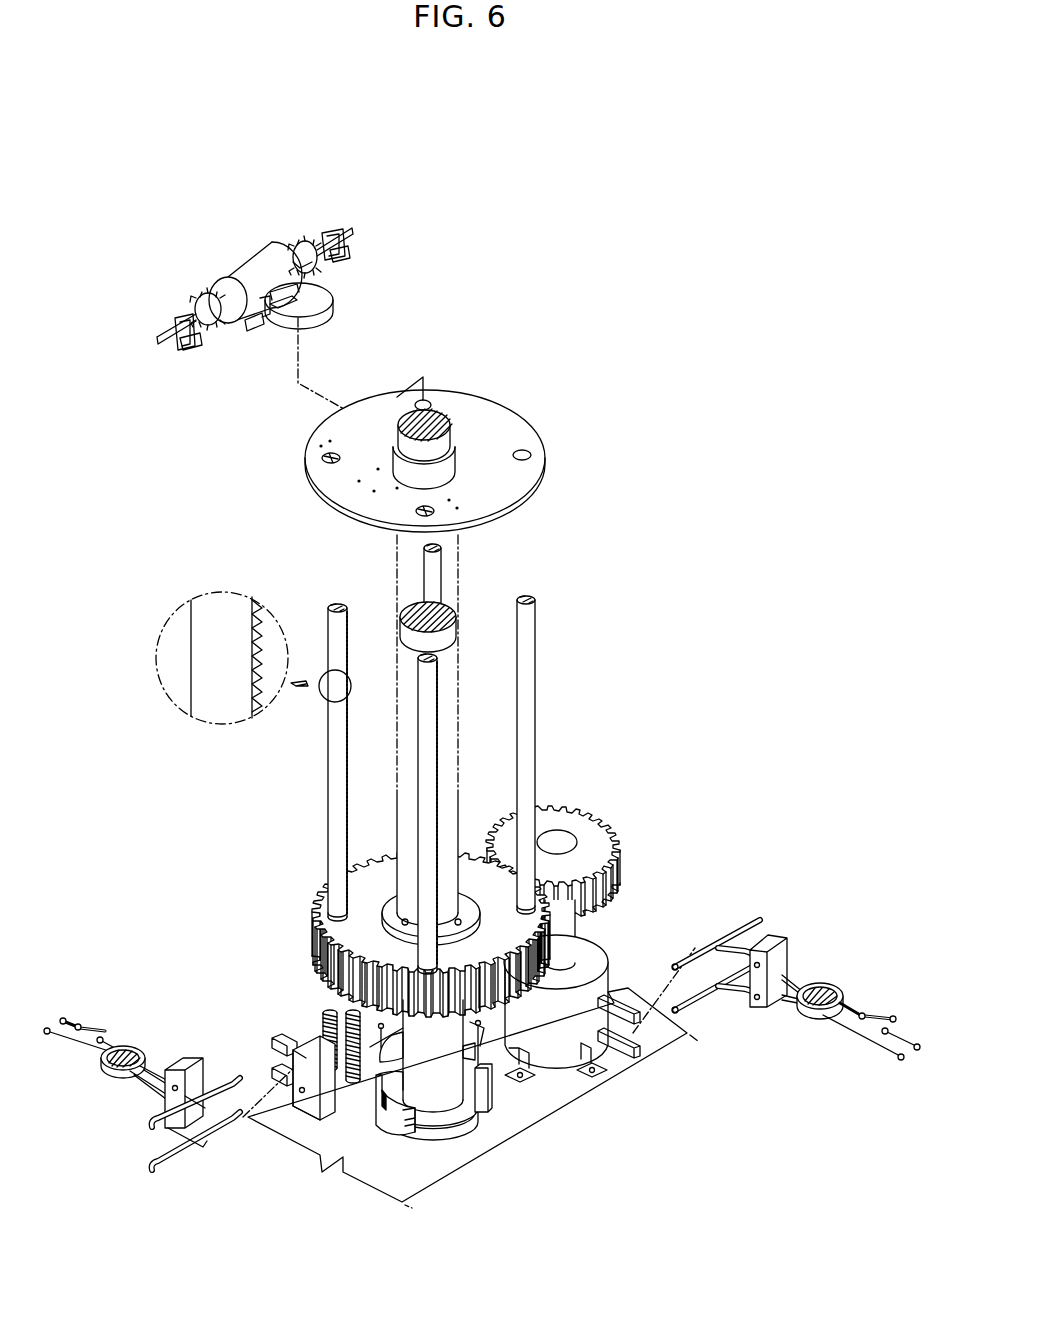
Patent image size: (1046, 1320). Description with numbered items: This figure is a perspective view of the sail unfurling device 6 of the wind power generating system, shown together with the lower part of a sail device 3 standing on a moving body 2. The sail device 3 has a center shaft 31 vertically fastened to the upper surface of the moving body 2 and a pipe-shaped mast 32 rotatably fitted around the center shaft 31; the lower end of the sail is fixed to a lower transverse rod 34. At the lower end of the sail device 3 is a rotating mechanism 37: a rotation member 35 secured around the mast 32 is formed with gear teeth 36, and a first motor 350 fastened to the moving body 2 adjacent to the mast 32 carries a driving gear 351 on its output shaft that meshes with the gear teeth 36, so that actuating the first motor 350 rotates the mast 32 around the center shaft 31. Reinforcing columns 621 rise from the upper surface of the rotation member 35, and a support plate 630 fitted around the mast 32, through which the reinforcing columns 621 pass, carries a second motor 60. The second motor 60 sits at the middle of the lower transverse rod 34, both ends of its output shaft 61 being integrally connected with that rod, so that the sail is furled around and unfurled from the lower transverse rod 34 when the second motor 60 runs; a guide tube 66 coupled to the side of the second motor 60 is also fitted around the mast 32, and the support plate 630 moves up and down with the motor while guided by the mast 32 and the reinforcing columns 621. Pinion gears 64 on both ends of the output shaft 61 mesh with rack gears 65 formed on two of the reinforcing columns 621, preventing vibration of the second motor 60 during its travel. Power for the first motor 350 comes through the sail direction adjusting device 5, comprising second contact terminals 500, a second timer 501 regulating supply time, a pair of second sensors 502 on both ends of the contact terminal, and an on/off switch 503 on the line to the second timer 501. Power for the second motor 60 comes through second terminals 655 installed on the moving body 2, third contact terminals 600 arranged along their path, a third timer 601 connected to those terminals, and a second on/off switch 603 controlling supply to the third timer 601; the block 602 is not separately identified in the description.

The moving body 2 is at (551, 1121).
The sail device 3 is at (176, 481).
The sail direction adjusting device 5 is at (796, 978).
The sail unfurling device 6 is at (153, 765).
The center shaft 31 is at (453, 429).
The mast 32 is at (457, 464).
The lower transverse rod 34 is at (338, 232).
The rotation member 35 is at (398, 934).
The gear teeth 36 is at (311, 904).
The rotating mechanism 37 is at (289, 830).
The second motor 60 is at (244, 283).
The output shaft 61 is at (298, 252).
The pinion gear 64 is at (320, 268).
The rack gear 65 is at (259, 622).
The guide tube 66 is at (334, 313).
The first motor 350 is at (598, 949).
The driving gear 351 is at (575, 808).
The second contact terminal 500 is at (708, 945).
The second timer 501 is at (810, 1014).
The second sensor 502 is at (774, 940).
The on/off switch 503 is at (880, 1008).
The third contact terminal 600 is at (231, 1084).
The third timer 601 is at (147, 1051).
The sensor block 602 is at (152, 1156).
The second on/off switch 603 is at (105, 1023).
The reinforcing column 621 is at (337, 604).
The support plate 630 is at (474, 402).
The second terminal 655 is at (296, 1045).